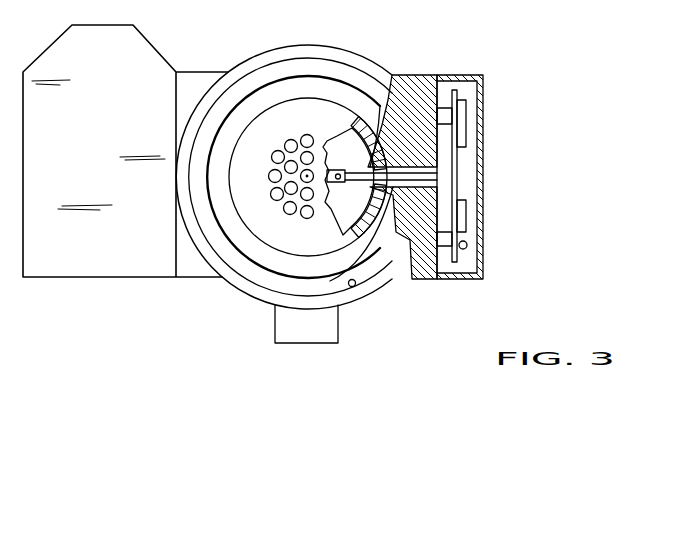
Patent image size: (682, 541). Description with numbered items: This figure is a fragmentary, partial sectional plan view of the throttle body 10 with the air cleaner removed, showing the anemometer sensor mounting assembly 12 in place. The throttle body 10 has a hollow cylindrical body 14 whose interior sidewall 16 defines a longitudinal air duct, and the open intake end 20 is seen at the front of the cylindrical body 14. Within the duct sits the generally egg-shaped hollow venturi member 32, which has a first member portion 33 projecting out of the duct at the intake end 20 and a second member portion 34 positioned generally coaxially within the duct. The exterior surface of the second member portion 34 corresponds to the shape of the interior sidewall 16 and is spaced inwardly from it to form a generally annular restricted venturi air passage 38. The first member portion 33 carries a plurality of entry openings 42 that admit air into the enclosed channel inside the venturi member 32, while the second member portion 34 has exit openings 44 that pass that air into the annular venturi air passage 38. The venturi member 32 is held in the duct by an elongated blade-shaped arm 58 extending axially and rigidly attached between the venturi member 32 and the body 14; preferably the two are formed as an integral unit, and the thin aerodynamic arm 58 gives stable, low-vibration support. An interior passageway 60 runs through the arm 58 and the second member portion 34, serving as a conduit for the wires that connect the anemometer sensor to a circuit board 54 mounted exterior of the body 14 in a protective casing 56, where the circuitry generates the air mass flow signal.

The throttle body 10 is at (201, 295).
The anemometer sensor mounting assembly 12 is at (244, 303).
The hollow cylindrical body 14 is at (378, 296).
The interior sidewall 16 is at (352, 287).
The open intake end 20 is at (390, 273).
The venturi member 32 is at (278, 103).
The first member portion 33 is at (302, 112).
The second member portion 34 is at (313, 258).
The venturi air passage 38 is at (245, 102).
The entry openings 42 is at (277, 201).
The exit openings 44 is at (372, 125).
The circuit board 54 is at (457, 109).
The protective casing 56 is at (482, 75).
The arm 58 is at (388, 113).
The interior passageway 60 is at (397, 190).